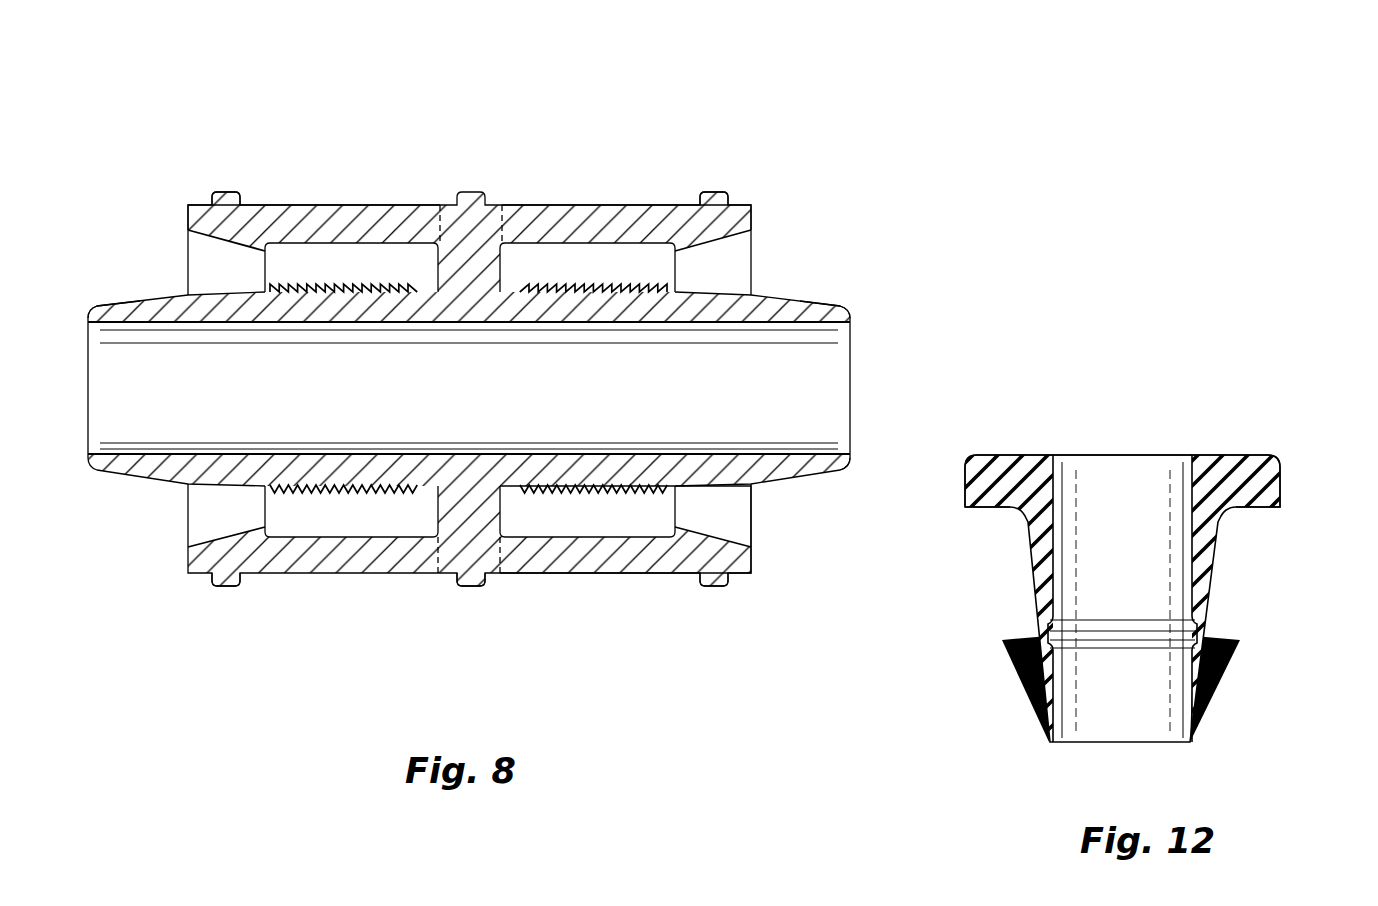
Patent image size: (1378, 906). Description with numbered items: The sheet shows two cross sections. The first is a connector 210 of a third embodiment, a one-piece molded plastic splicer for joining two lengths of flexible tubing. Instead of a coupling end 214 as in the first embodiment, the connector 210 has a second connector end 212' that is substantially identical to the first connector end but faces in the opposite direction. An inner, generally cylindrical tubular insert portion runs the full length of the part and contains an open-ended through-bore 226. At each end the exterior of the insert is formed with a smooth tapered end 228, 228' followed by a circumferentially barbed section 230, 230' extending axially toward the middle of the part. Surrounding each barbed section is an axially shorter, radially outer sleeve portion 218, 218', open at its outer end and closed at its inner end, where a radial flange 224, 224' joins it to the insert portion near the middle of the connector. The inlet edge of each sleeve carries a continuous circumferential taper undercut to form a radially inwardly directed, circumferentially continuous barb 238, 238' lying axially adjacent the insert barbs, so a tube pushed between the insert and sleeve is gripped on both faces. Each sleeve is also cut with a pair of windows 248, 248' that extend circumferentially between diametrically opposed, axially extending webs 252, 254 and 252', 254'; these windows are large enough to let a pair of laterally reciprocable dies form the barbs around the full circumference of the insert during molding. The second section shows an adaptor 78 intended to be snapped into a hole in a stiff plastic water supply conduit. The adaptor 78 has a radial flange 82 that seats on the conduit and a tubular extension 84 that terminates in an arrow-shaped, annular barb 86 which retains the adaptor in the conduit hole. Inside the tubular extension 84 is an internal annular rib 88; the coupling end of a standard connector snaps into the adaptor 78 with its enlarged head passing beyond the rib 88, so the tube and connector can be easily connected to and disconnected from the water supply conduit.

In FIG. 8, the connector 210 is at (477, 137).
In FIG. 8, the connector end 212' is at (686, 598).
In FIG. 8, the coupling end 214 is at (843, 205).
In FIG. 8, the radially outer sleeve portion 218 is at (314, 175).
In FIG. 8, the radially outer sleeve portion 218' is at (626, 177).
In FIG. 8, the radial flange 224 is at (351, 511).
In FIG. 8, the radial flange 224' is at (587, 511).
In FIG. 8, the through-bore 226 is at (150, 427).
In FIG. 8, the tapered end 228 is at (93, 291).
In FIG. 8, the tapered end 228' is at (831, 427).
In FIG. 8, the barbed section 230 is at (343, 269).
In FIG. 8, the barbed section 230' is at (593, 269).
In FIG. 8, the circumferentially continuous barb 238 is at (192, 388).
In FIG. 8, the circumferentially continuous barb 238' is at (749, 388).
In FIG. 8, the window 248 is at (351, 213).
In FIG. 8, the window 248' is at (587, 201).
In FIG. 8, the axially extending web 252 is at (240, 163).
In FIG. 8, the axially extending web 252' is at (697, 165).
In FIG. 8, the axially extending web 254 is at (348, 613).
In FIG. 8, the axially extending web 254' is at (629, 613).
In FIG. 12, the adaptor 78 is at (1290, 558).
In FIG. 12, the radial flange 82 is at (1012, 470).
In FIG. 12, the tubular extension 84 is at (1217, 592).
In FIG. 12, the annular barb 86 is at (1030, 688).
In FIG. 12, the internal annular rib 88 is at (1060, 633).